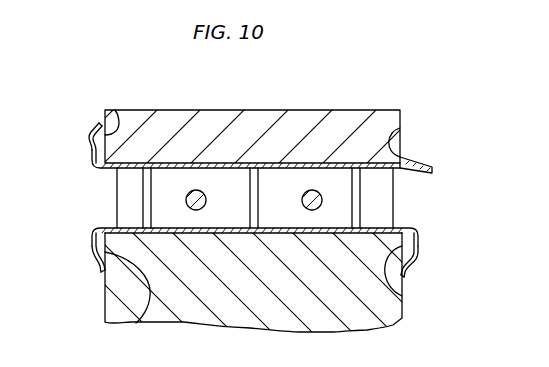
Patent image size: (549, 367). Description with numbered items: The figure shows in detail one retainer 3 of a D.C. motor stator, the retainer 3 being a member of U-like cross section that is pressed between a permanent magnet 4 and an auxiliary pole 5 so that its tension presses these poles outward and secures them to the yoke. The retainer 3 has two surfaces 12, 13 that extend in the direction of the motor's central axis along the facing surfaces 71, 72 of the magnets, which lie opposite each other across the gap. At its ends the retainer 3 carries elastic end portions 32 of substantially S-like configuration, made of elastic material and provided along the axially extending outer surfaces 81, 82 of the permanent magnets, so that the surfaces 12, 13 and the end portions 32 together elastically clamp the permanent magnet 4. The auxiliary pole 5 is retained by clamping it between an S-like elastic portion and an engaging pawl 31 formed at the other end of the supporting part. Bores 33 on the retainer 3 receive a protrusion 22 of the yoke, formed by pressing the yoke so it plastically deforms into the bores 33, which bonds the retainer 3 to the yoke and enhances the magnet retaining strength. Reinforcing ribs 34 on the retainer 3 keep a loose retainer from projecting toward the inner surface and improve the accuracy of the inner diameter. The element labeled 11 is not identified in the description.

The retainer 3 is at (380, 202).
The permanent magnet 4 is at (115, 299).
The auxiliary pole 5 is at (363, 140).
The side wall 11 is at (378, 190).
The surface 12 is at (137, 228).
The surface 13 is at (137, 169).
The protrusion 22 is at (190, 188).
The engaging pawl 31 is at (92, 143).
The elastic end portion 32 is at (412, 162).
The bore 33 is at (200, 189).
The reinforcing rib 34 is at (143, 202).
The facing surface of magnet 71 is at (230, 165).
The facing surface of magnet 72 is at (212, 233).
The outer surface of permanent magnet 81 is at (115, 110).
The outer surface of permanent magnet 82 is at (136, 323).